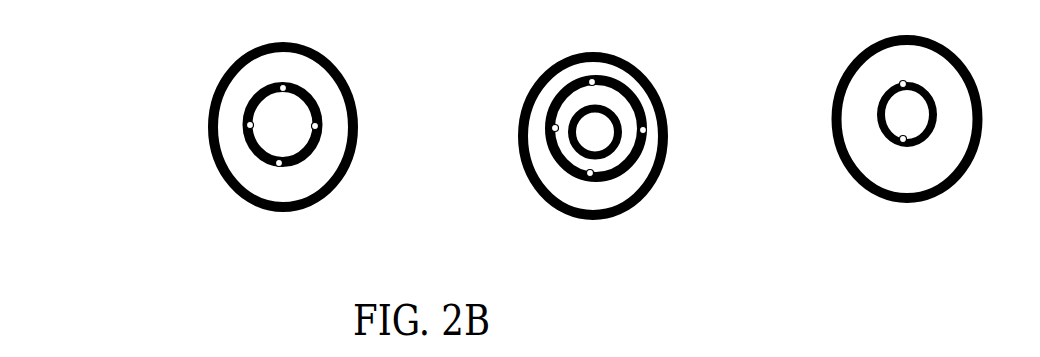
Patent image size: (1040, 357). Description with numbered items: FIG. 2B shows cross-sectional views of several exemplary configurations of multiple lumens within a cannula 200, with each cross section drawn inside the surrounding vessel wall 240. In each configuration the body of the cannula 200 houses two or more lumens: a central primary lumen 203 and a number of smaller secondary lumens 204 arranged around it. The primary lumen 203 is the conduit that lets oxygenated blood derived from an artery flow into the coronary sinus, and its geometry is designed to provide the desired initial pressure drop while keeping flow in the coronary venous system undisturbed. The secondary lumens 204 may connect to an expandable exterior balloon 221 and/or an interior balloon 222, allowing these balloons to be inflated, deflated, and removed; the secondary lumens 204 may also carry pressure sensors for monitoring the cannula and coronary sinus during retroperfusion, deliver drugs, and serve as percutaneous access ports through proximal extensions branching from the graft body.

The cannula 200 is at (300, 163).
The primary lumen 203 is at (285, 118).
The secondary lumens 204 is at (268, 83).
The exterior balloon 221 is at (574, 187).
The interior balloon 222 is at (644, 133).
The vessel wall 240 is at (208, 152).